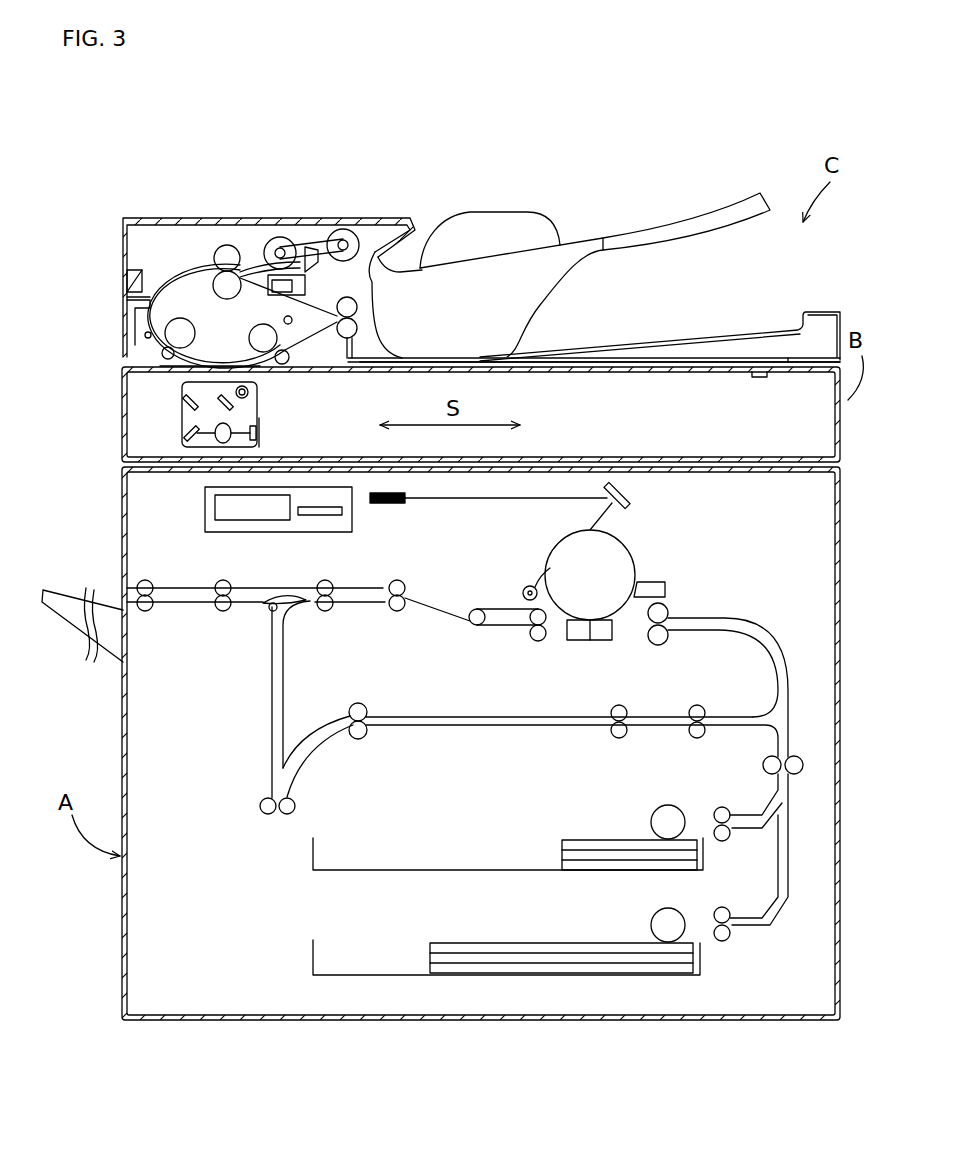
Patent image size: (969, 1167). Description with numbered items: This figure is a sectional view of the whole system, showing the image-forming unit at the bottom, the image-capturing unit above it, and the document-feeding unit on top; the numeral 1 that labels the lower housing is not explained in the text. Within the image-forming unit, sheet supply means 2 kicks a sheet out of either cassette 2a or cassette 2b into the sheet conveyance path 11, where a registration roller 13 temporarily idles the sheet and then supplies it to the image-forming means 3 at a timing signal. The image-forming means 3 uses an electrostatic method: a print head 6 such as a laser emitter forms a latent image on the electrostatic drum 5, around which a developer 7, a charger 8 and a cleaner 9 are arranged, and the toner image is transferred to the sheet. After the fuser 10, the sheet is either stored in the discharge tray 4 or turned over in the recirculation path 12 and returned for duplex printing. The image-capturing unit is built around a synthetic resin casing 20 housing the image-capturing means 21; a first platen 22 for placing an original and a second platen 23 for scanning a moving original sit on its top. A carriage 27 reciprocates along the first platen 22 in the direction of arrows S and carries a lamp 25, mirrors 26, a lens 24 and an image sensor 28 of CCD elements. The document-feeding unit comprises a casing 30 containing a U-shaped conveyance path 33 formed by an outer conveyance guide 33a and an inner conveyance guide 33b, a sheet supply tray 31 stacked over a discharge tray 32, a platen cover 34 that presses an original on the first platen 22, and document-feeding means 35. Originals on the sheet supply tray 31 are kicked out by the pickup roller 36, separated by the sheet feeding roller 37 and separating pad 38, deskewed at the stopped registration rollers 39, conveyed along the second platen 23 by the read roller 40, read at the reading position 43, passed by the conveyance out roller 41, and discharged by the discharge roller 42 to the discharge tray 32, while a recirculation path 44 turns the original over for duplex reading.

The image forming apparatus main body 1 is at (123, 524).
The sheet supply means 2 is at (735, 950).
The cassette 2a is at (312, 853).
The cassette 2b is at (312, 953).
The image-forming means 3 is at (690, 530).
The discharge tray 4 is at (74, 627).
The electrostatic drum 5 is at (573, 560).
The print head 6 is at (628, 494).
The developer 7 is at (658, 583).
The charger 8 is at (582, 638).
The cleaner 9 is at (526, 586).
The fuser 10 is at (505, 627).
The sheet conveyance path 11 is at (785, 856).
The recirculation path 12 is at (487, 727).
The registration roller 13 is at (763, 765).
The casing 20 is at (123, 406).
The image-capturing means 21 is at (345, 414).
The first platen 22 is at (633, 372).
The second platen 23 is at (195, 368).
The lens 24 is at (222, 448).
The lamp 25 is at (250, 392).
The mirrors 26 is at (188, 404).
The carriage 27 is at (236, 402).
The image sensor 28 is at (258, 448).
The casing 30 is at (123, 236).
The sheet supply tray 31 is at (637, 222).
The discharge tray 32 is at (655, 332).
The conveyance path 33 is at (140, 303).
The outer conveyance guide 33a is at (152, 270).
The inner conveyance guide 33b is at (180, 280).
The platen cover 34 is at (578, 356).
The document-feeding means 35 is at (112, 280).
The pickup roller 36 is at (345, 229).
The sheet feeding roller 37 is at (280, 237).
The separating pad 38 is at (300, 265).
The registration rollers 39 is at (222, 245).
The read roller 40 is at (132, 354).
The conveyance out roller 41 is at (258, 338).
The discharge roller 42 is at (358, 326).
The reading position 43 is at (178, 330).
The recirculation path 44 is at (305, 322).